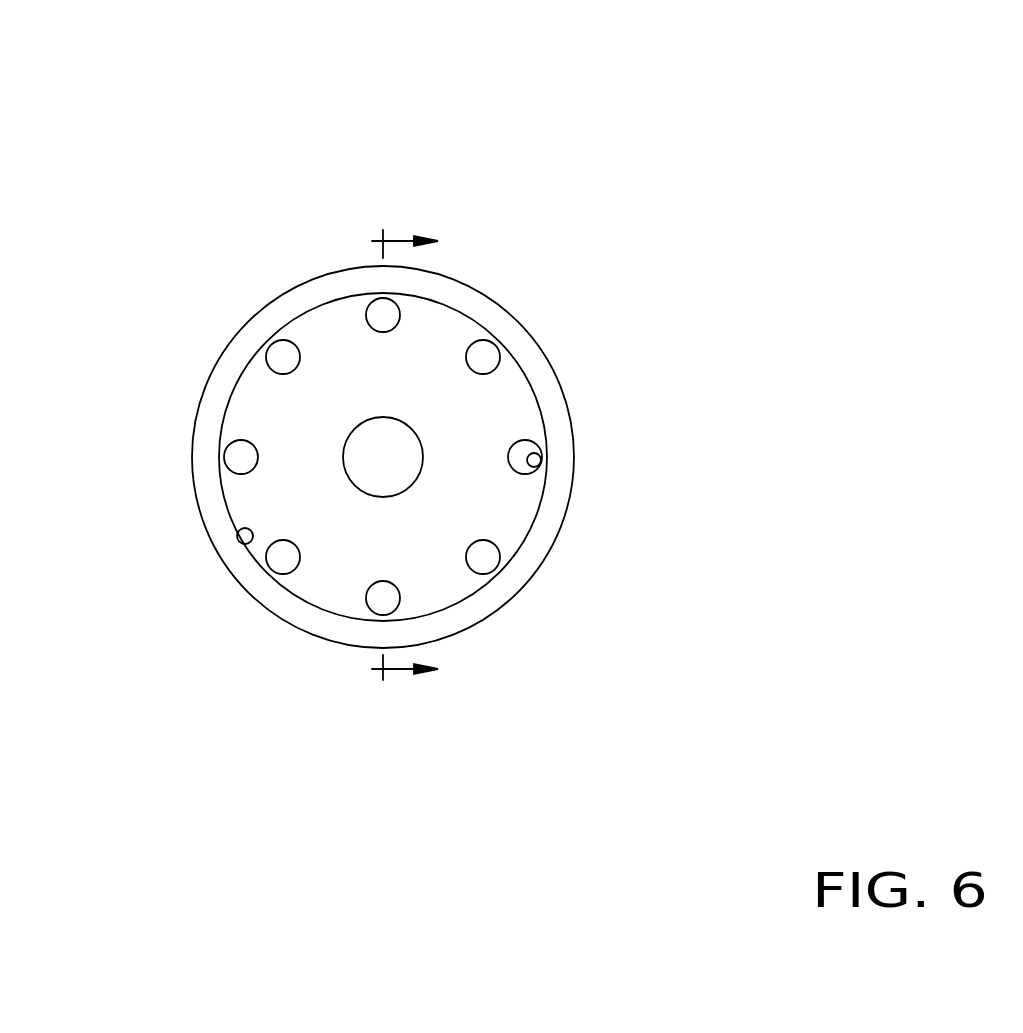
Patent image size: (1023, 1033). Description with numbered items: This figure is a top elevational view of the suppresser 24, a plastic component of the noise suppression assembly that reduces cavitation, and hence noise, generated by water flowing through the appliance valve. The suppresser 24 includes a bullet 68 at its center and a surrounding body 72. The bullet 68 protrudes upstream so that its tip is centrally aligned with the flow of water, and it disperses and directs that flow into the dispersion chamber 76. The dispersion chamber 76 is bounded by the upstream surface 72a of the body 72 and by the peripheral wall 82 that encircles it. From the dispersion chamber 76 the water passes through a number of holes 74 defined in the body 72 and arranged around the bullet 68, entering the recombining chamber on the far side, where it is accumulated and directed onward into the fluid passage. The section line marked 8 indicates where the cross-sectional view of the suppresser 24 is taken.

The suppresser 24 is at (750, 167).
The bullet 68 is at (402, 443).
The body 72 is at (327, 331).
The upstream surface 72a is at (508, 517).
The holes 74 is at (533, 471).
The dispersion chamber 76 is at (263, 418).
The peripheral wall 82 is at (247, 543).
The section line 8- 8 is at (416, 456).